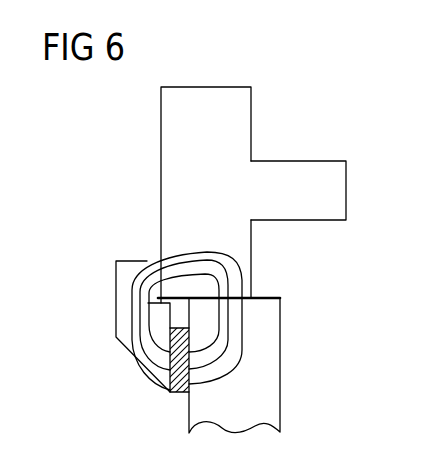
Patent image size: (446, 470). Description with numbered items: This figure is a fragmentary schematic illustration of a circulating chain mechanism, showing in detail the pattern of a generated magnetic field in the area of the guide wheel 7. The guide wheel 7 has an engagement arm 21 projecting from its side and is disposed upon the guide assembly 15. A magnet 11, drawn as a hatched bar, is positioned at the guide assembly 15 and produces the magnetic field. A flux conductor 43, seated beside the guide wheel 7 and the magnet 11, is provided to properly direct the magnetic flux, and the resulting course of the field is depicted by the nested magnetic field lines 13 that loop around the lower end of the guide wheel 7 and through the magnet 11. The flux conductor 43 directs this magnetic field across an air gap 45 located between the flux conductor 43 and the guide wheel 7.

The guide wheel 7 is at (240, 112).
The engagement arm 21 is at (322, 185).
The guide assembly 15 is at (255, 382).
The flux conductor 43 is at (122, 304).
The air gap 45 is at (154, 282).
The magnet 11 is at (173, 393).
The magnetic field lines 13 is at (241, 279).